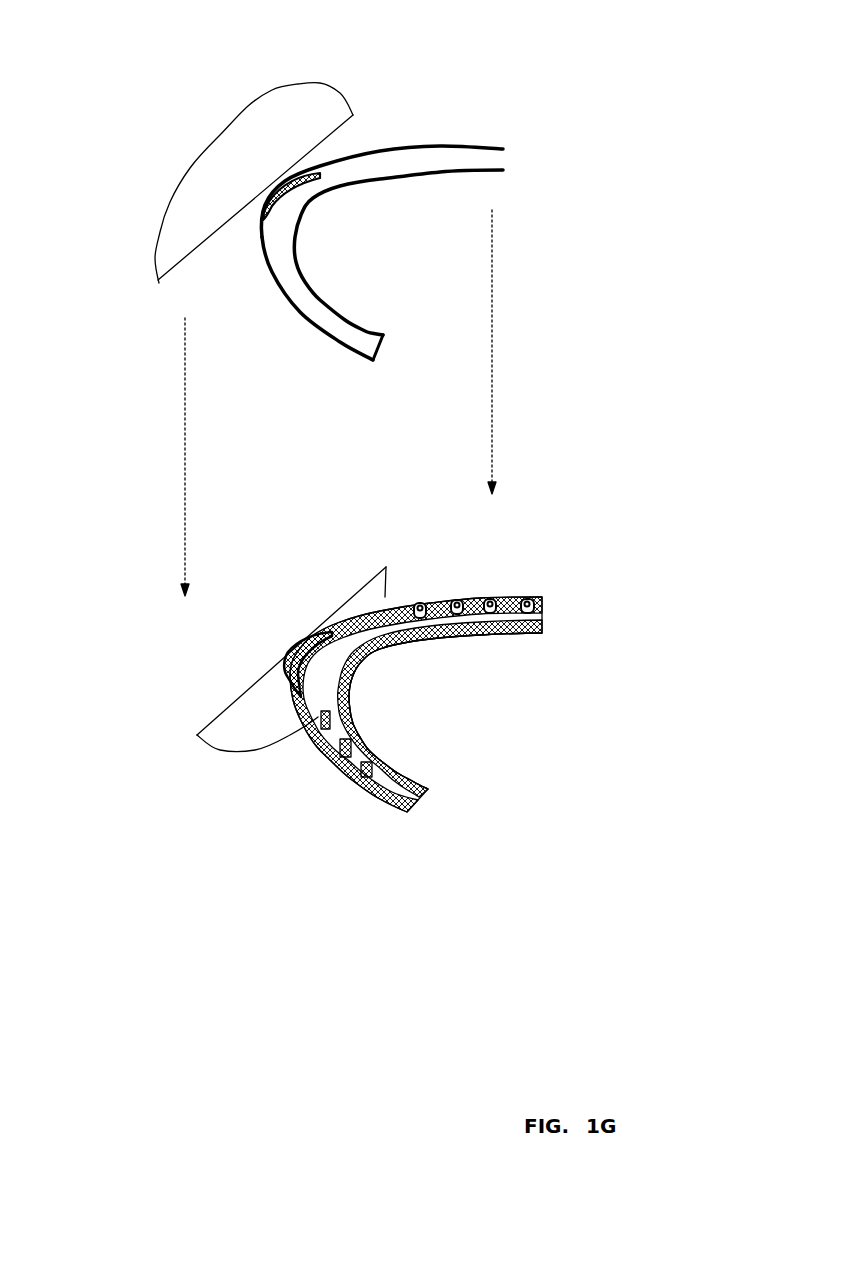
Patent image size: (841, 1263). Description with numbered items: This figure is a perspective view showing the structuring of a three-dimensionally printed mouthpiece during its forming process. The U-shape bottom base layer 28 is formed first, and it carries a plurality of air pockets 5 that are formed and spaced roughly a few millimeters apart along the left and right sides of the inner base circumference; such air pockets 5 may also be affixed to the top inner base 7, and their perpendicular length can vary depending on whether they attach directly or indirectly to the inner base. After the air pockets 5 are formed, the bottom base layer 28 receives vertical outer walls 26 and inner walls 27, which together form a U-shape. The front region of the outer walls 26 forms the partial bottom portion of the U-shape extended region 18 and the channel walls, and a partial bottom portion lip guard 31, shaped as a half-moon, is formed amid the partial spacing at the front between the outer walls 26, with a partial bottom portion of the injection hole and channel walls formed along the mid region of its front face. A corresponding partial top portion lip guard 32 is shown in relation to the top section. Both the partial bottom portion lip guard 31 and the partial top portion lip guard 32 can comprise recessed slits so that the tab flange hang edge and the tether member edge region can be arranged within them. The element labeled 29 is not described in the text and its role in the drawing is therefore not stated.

The air pockets 5 is at (541, 609).
The top inner base 7 is at (400, 624).
The U-shape extended region 18 is at (300, 168).
The outer walls 26 is at (437, 143).
The inner walls 27 is at (309, 272).
The bottom base layer 28 is at (332, 789).
The outer edge of band 29 is at (291, 338).
The partial bottom portion lip guard 31 is at (237, 718).
The partial top portion lip guard 32 is at (182, 170).